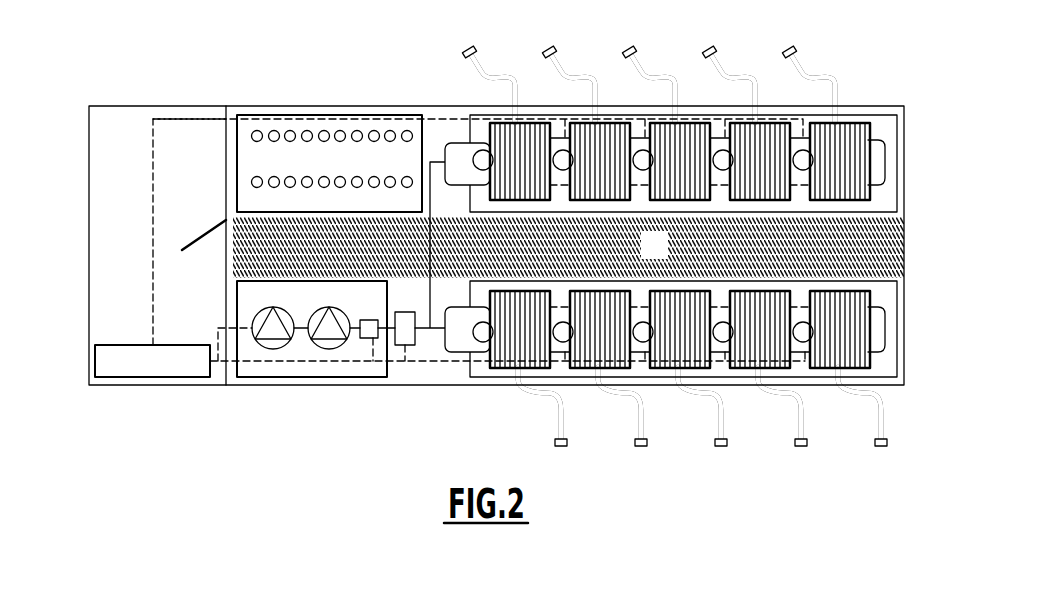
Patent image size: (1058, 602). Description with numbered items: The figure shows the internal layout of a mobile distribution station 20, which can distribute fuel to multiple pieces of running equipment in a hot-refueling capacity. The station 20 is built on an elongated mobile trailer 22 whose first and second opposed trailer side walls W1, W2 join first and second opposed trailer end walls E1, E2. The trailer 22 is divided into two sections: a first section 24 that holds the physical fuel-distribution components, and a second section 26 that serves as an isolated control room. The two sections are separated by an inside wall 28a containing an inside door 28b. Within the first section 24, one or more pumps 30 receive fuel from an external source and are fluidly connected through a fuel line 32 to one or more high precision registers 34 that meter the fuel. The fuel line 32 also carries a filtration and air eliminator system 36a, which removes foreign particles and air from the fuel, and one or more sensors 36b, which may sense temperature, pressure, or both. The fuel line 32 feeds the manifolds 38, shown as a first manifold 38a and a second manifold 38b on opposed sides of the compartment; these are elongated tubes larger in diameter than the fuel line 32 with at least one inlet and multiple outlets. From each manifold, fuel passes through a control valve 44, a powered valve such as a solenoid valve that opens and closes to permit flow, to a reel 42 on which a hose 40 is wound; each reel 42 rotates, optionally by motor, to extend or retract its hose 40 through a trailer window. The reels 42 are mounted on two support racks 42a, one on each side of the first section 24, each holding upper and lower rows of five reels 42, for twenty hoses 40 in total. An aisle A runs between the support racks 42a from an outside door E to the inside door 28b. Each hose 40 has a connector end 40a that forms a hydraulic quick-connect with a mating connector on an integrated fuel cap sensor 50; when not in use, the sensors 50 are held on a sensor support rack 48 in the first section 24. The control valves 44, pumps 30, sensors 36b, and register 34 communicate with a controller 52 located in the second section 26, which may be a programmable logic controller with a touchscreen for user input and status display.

The mobile distribution station 20 is at (220, 418).
The mobile trailer 22 is at (391, 102).
The first section 24 is at (886, 253).
The second section 26 is at (117, 250).
The inside wall 28a is at (224, 127).
The inside door 28b is at (223, 219).
The pumps 30 is at (294, 352).
The fuel line 32 is at (425, 332).
The high precision registers 34 is at (404, 348).
The filtration and air eliminator system 36a is at (362, 340).
The sensors 36b is at (387, 324).
The manifolds 38 is at (445, 141).
The first manifold 38a is at (882, 304).
The second manifold 38b is at (882, 186).
The hoses 40 is at (509, 77).
The connector end 40a is at (627, 46).
The reels 42 is at (527, 122).
The support rack 42a is at (845, 121).
The control valves 44 is at (476, 142).
The sensor support rack 48 is at (299, 114).
The integrated fuel cap sensors 50 is at (357, 130).
The controller 52 is at (135, 385).
The first trailer side wall W1 is at (251, 105).
The second trailer side wall W2 is at (257, 385).
The outside door E is at (903, 246).
The first trailer end wall E1 is at (904, 108).
The second trailer end wall E2 is at (89, 108).
The aisle A is at (654, 245).